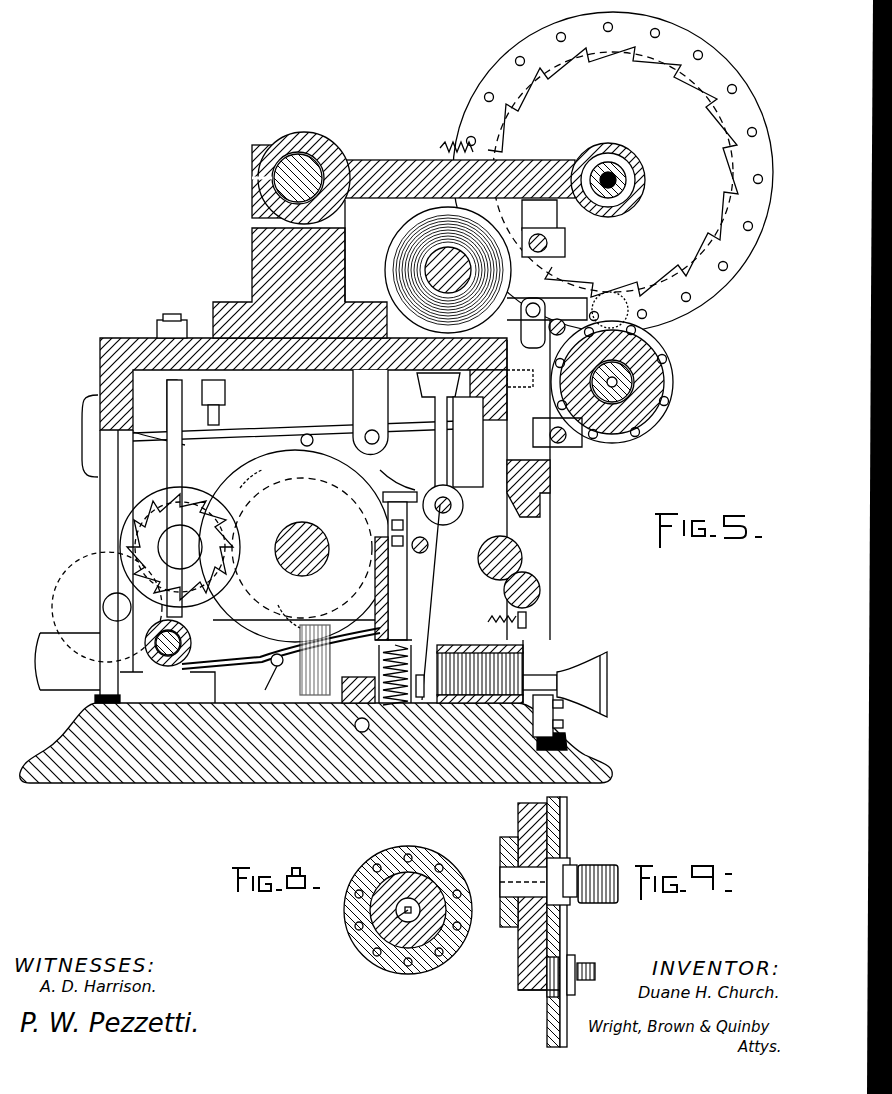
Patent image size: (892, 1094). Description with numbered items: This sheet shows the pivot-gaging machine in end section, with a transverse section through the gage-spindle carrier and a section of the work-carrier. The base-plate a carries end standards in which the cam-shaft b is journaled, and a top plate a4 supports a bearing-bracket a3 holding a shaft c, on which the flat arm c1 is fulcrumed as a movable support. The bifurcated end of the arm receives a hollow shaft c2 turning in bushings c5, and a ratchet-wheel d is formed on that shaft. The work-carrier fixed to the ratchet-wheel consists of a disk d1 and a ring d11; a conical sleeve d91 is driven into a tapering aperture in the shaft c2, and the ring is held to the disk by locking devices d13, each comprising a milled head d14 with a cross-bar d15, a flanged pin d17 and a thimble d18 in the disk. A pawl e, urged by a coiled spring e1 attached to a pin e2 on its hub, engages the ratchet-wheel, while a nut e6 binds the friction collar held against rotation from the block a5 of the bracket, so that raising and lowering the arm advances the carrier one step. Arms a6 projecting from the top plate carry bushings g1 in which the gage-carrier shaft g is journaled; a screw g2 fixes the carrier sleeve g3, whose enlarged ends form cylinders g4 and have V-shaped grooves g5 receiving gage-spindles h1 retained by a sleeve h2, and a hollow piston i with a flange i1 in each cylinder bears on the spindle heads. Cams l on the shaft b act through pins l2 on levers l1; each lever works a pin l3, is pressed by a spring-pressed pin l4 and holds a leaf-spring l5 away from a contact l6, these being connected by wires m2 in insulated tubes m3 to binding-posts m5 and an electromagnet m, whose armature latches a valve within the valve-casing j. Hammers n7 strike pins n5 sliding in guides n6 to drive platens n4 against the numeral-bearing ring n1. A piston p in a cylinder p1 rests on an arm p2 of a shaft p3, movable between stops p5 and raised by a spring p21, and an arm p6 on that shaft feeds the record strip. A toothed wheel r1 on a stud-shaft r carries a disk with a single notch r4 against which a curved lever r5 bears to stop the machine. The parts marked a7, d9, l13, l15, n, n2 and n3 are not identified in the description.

In FIG. 5, the base-plate a is at (322, 770).
In FIG. 5, the bearing-bracket a3 is at (252, 262).
In FIG. 5, the top plate a4 is at (284, 372).
In FIG. 5, the extension or block of the bracket a5 is at (565, 240).
In FIG. 5, the arms a6 is at (510, 480).
In FIG. 9, the arms a6 is at (600, 862).
In FIG. 9, the pin a7 is at (568, 856).
In FIG. 5, the shaft b is at (312, 535).
In FIG. 5, the shaft c is at (330, 155).
In FIG. 5, the flat plate or arm c1 is at (538, 160).
In FIG. 9, the flat plate or arm c1 is at (505, 928).
In FIG. 5, the hollow shaft or arbor c2 is at (640, 175).
In FIG. 9, the hollow shaft or arbor c2 is at (500, 885).
In FIG. 5, the bushings c5 is at (630, 205).
In FIG. 9, the bushings c5 is at (505, 910).
In FIG. 5, the ratchet-wheel d is at (668, 118).
In FIG. 9, the ratchet-wheel d is at (518, 822).
In FIG. 5, the disk d1 is at (750, 108).
In FIG. 9, the disk d1 is at (540, 806).
In FIG. 5, the ratchet d9 is at (700, 296).
In FIG. 9, the ring d11 is at (568, 806).
In FIG. 9, the conical sleeve d91 is at (500, 858).
In FIG. 9, the locking devices d13 is at (566, 985).
In FIG. 9, the milled head d14 is at (596, 970).
In FIG. 9, the cross-bar d15 is at (574, 960).
In FIG. 9, the pin d17 is at (566, 996).
In FIG. 9, the thimble d18 is at (540, 992).
In FIG. 5, the pawl e is at (430, 210).
In FIG. 5, the coiled spring e1 is at (440, 146).
In FIG. 5, the pin e2 is at (470, 150).
In FIG. 5, the nut e6 is at (539, 215).
In FIG. 5, the shaft g is at (660, 392).
In FIG. 8, the shaft g is at (348, 928).
In FIG. 5, the bushings g1 is at (684, 432).
In FIG. 5, the screw g2 is at (160, 665).
In FIG. 5, the sleeve g3 is at (269, 680).
In FIG. 8, the sleeve g3 is at (378, 958).
In FIG. 5, the cylinders g4 is at (397, 477).
In FIG. 5, the V-shaped grooves g5 is at (304, 645).
In FIG. 8, the V-shaped grooves g5 is at (408, 966).
In FIG. 8, the gage-spindles h1 is at (410, 852).
In FIG. 8, the sleeve h2 is at (375, 866).
In FIG. 5, the hollow piston i is at (405, 566).
In FIG. 5, the flange i1 is at (390, 523).
In FIG. 5, the valve-casing j is at (376, 565).
In FIG. 5, the cams l is at (295, 420).
In FIG. 5, the levers l1 is at (355, 420).
In FIG. 5, the pin l2 is at (307, 434).
In FIG. 5, the pin l3 is at (440, 330).
In FIG. 5, the spring-pressed pin l4 is at (220, 420).
In FIG. 5, the leaf-spring l5 is at (160, 445).
In FIG. 5, the contact l6 is at (167, 425).
In FIG. 5, the rod l13 is at (392, 700).
In FIG. 5, the arm l15 is at (488, 628).
In FIG. 5, the electromagnet m is at (261, 658).
In FIG. 5, the wire m2 is at (183, 470).
In FIG. 5, the insulated tube m3 is at (100, 488).
In FIG. 5, the binding-posts m5 is at (553, 722).
In FIG. 5, the bell crank n is at (438, 498).
In FIG. 5, the numeral-bearing ring n1 is at (575, 300).
In FIG. 5, the roller n2 is at (628, 306).
In FIG. 5, the pawl n3 is at (251, 481).
In FIG. 5, the platens n4 is at (544, 398).
In FIG. 5, the pins n5 is at (290, 487).
In FIG. 5, the guides n6 is at (425, 719).
In FIG. 5, the hammers n7 is at (438, 433).
In FIG. 5, the piston p is at (552, 518).
In FIG. 5, the cylinder p1 is at (468, 442).
In FIG. 5, the arm p2 is at (469, 595).
In FIG. 5, the shaft p3 is at (545, 570).
In FIG. 5, the stops p5 is at (436, 602).
In FIG. 5, the arm p6 is at (545, 590).
In FIG. 5, the spring p21 is at (528, 622).
In FIG. 5, the stud-shaft r is at (235, 548).
In FIG. 5, the ratchet or toothed wheel r1 is at (150, 525).
In FIG. 5, the notch r4 is at (140, 580).
In FIG. 5, the curved lever r5 is at (90, 612).